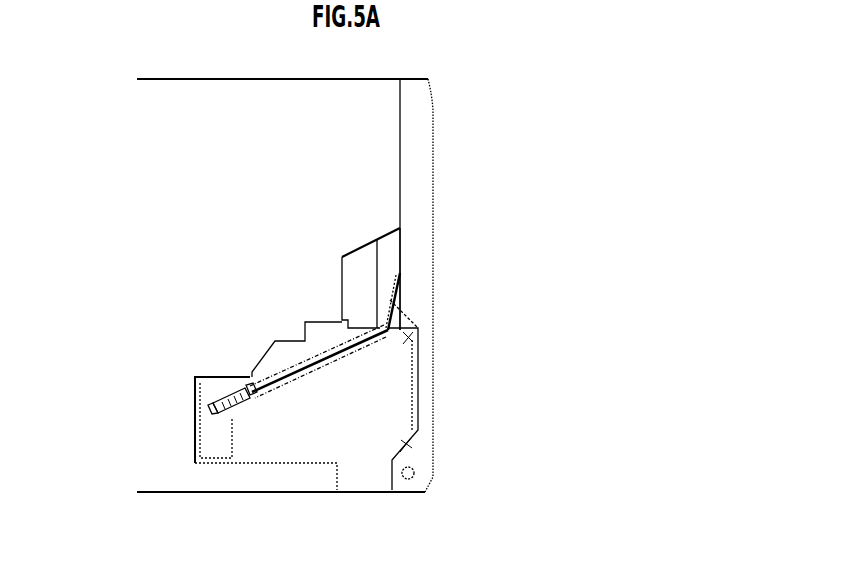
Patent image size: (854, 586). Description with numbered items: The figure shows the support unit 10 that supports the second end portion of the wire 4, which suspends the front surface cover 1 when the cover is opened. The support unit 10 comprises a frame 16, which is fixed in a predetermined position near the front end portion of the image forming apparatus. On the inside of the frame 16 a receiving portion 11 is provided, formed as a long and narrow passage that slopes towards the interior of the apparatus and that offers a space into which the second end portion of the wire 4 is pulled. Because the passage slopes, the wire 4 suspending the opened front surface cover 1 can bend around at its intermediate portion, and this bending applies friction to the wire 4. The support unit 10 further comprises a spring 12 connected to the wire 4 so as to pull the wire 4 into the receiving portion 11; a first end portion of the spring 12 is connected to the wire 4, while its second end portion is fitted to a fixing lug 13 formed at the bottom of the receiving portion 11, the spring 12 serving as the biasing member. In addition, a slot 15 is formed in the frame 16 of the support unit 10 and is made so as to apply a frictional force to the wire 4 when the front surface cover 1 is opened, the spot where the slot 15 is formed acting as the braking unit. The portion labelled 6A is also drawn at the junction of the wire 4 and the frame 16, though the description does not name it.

The front surface cover 1 is at (418, 192).
The wire 4 is at (340, 352).
The rotation shaft 6A is at (400, 275).
The support unit 10 is at (302, 420).
The receiving portion 11 is at (312, 368).
The spring 12 is at (230, 413).
The fixing lug 13 is at (207, 407).
The slot 15 is at (418, 332).
The frame 16 is at (400, 370).